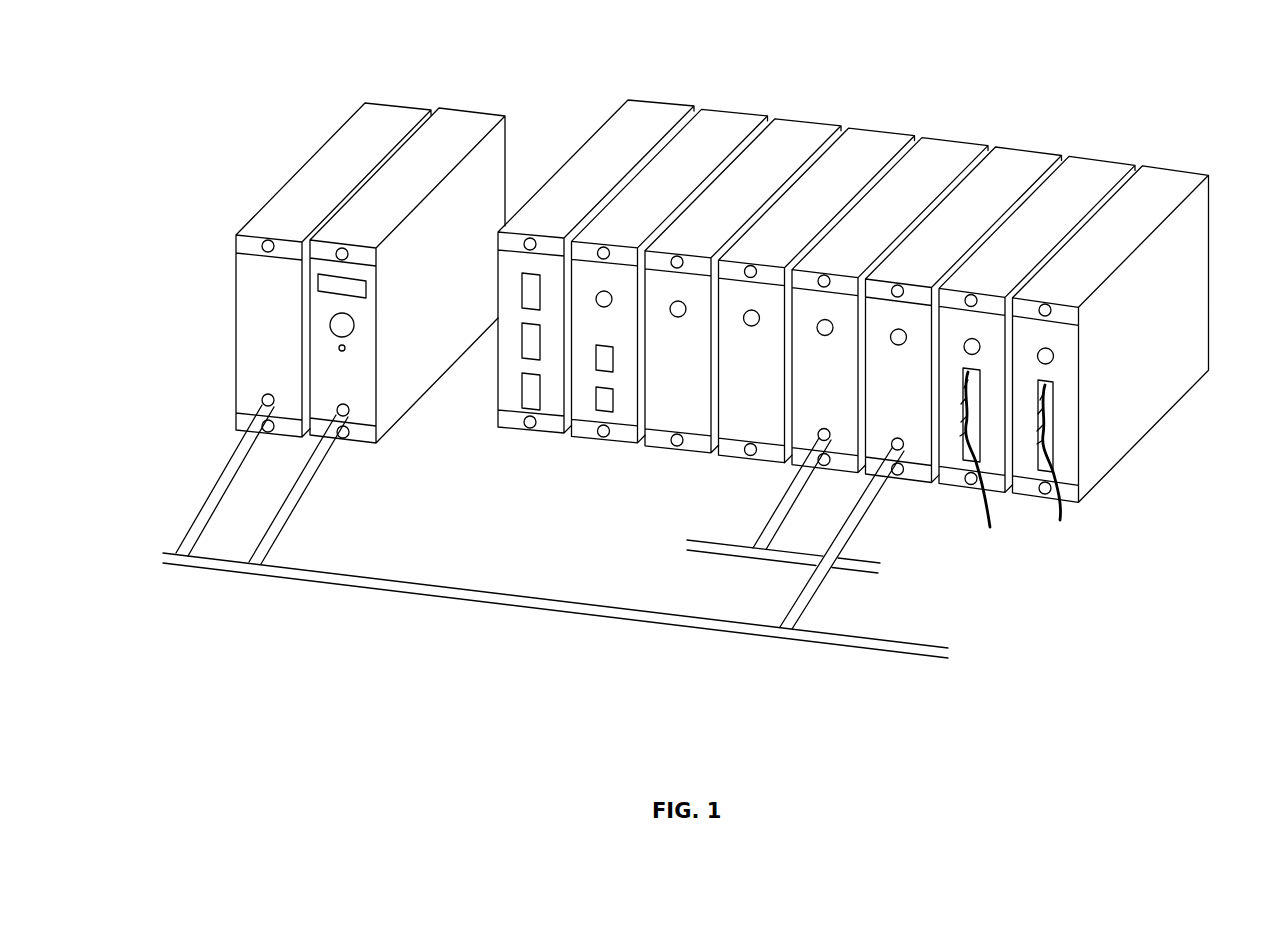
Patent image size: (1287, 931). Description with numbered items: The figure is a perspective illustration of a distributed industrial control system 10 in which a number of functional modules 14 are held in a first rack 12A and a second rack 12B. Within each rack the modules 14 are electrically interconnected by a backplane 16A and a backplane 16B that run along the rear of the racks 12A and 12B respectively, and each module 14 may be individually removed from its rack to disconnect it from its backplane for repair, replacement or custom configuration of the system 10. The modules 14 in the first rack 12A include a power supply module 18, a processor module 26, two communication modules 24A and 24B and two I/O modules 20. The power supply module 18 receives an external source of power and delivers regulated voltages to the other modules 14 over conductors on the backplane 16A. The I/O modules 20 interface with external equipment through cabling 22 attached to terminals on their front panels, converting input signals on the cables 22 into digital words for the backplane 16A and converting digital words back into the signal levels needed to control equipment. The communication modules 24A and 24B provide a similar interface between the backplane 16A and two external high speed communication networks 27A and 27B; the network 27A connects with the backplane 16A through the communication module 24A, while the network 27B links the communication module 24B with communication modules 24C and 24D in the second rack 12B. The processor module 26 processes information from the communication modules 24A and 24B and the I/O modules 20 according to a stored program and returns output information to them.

The distributed industrial control system 10 is at (723, 387).
The first rack 12A is at (1112, 433).
The second rack 12B is at (465, 345).
The functional modules 14 is at (677, 280).
The backplane 16A is at (1198, 95).
The backplane 16B is at (525, 48).
The power supply module 18 is at (513, 403).
The I/O modules 20 is at (987, 352).
The cabling 22 is at (990, 527).
The communication module 24A is at (831, 318).
The communication module 24B is at (915, 322).
The communication module 24C is at (258, 368).
The communication module 24D is at (358, 413).
The processor module 26 is at (588, 412).
The high speed communication network 27A is at (695, 540).
The high speed communication network 27B is at (395, 575).